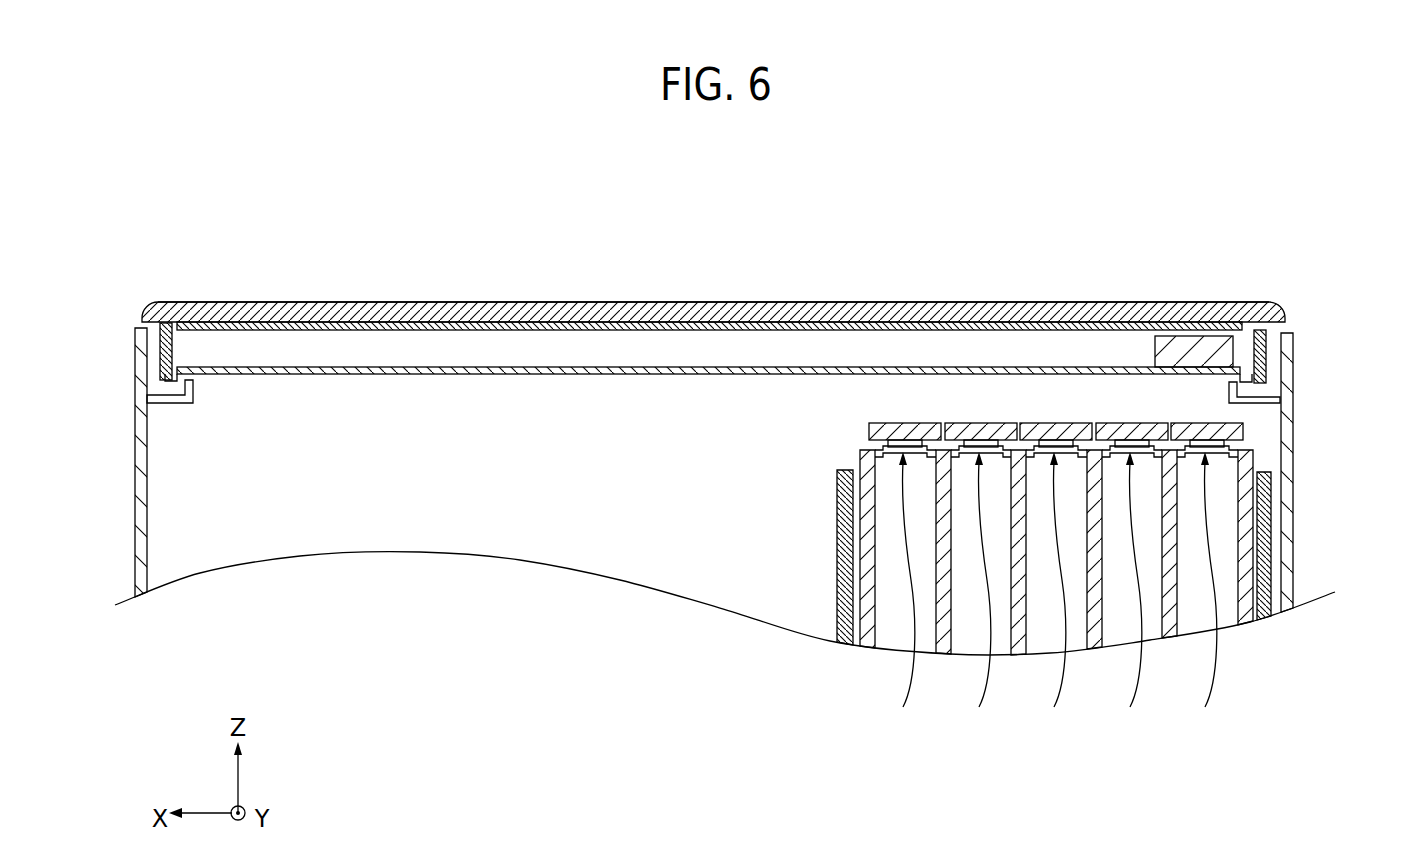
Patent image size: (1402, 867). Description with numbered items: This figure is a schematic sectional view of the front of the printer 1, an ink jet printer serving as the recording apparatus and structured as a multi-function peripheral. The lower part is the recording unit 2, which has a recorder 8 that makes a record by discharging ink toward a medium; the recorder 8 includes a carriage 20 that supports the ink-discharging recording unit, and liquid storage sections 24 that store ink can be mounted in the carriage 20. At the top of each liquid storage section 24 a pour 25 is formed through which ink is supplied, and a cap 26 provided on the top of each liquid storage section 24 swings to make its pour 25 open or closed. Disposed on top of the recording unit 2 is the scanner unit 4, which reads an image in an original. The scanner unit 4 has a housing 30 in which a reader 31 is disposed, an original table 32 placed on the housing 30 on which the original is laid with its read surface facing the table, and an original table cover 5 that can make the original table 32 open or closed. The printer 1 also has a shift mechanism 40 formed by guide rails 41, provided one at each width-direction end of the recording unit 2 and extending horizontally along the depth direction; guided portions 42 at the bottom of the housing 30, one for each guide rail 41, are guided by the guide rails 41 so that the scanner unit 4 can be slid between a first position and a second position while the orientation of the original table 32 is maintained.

The printer 1 is at (1312, 280).
The recording unit 2 is at (140, 557).
The scanner unit 4 is at (678, 290).
The original table cover 5 is at (500, 303).
The recorder 8 is at (838, 553).
The carriage 20 is at (1011, 615).
The liquid storage section 24 is at (875, 598).
The pour 25 is at (1056, 597).
The cap 26 is at (1052, 422).
The housing 30 is at (285, 366).
The reader 31 is at (1187, 343).
The original table 32 is at (423, 322).
The shift mechanism 40 is at (212, 414).
The guide rail 41 is at (163, 398).
The guided portion 42 is at (160, 322).